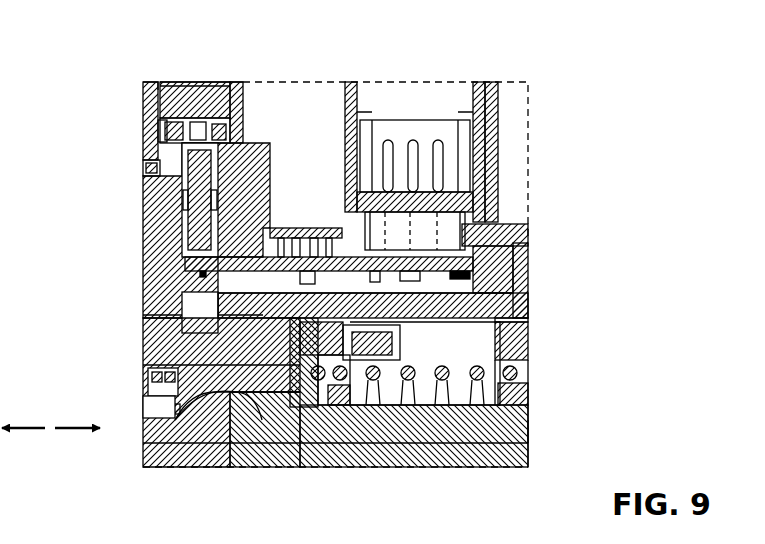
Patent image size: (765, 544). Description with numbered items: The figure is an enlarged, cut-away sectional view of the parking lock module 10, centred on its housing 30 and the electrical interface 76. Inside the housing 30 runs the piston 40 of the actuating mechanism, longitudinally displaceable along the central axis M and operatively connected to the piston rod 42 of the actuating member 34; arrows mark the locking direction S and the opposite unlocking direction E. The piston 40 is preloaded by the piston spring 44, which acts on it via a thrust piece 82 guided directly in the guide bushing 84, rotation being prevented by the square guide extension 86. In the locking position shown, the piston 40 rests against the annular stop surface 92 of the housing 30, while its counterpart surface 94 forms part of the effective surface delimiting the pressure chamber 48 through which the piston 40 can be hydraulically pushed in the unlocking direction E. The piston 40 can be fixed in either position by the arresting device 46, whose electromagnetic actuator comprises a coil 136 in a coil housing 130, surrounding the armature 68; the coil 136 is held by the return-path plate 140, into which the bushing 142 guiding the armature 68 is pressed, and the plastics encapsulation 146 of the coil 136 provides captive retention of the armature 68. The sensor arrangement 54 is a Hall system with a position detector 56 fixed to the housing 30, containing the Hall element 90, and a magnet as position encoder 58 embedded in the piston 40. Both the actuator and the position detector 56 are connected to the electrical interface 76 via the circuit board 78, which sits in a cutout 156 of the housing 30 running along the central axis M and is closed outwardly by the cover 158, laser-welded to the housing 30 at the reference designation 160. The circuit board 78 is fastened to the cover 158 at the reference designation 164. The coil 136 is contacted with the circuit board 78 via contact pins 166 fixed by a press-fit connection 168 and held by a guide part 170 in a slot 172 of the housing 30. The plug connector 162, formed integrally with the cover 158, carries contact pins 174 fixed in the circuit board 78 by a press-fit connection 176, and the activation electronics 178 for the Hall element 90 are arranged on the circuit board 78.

The parking lock module 10 is at (562, 232).
The housing 30 is at (527, 300).
The actuating member 34 is at (183, 468).
The piston 40 is at (282, 405).
The piston rod 42 is at (143, 422).
The piston spring 44 is at (520, 374).
The arresting device 46 is at (212, 97).
The pressure chamber 48 is at (340, 405).
The sensor arrangement 54 is at (530, 266).
The position detector 56 is at (530, 315).
The position encoder 58 is at (440, 288).
The armature 68 is at (153, 80).
The electrical interface 76 is at (430, 98).
The circuit board 78 is at (506, 226).
The thrust piece 82 is at (392, 455).
The guide bushing 84 is at (530, 352).
The guide extension 86 is at (493, 458).
The Hall element 90 is at (425, 288).
The annular stop surface 92 is at (252, 450).
The counterpart surface 94 is at (232, 400).
The coil housing 130 is at (245, 132).
The coil 136 is at (205, 82).
The return-path plate 140 is at (148, 105).
The bushing 142 is at (160, 130).
The plastics encapsulation 146 is at (218, 92).
The cutout 156 is at (290, 240).
The cover 158 is at (313, 240).
The laser weld 160 is at (530, 240).
The plug connector 162 is at (478, 122).
The fastening 164 is at (298, 240).
The contact pins 166 is at (150, 165).
The press-fit connection 168 is at (184, 262).
The guide part 170 is at (172, 188).
The slot 172 is at (186, 250).
The contact pins 174 is at (437, 150).
The press-fit connection 176 is at (283, 290).
The activation electronics 178 is at (486, 150).
The central axis M is at (530, 432).
The locking direction S is at (27, 428).
The unlocking direction E is at (67, 428).